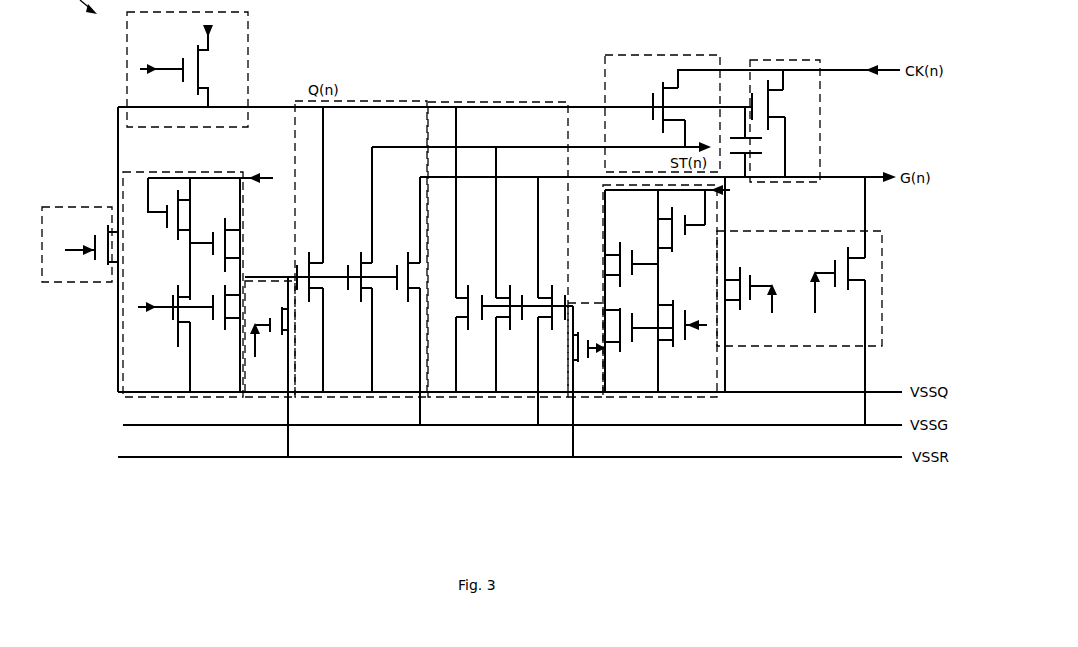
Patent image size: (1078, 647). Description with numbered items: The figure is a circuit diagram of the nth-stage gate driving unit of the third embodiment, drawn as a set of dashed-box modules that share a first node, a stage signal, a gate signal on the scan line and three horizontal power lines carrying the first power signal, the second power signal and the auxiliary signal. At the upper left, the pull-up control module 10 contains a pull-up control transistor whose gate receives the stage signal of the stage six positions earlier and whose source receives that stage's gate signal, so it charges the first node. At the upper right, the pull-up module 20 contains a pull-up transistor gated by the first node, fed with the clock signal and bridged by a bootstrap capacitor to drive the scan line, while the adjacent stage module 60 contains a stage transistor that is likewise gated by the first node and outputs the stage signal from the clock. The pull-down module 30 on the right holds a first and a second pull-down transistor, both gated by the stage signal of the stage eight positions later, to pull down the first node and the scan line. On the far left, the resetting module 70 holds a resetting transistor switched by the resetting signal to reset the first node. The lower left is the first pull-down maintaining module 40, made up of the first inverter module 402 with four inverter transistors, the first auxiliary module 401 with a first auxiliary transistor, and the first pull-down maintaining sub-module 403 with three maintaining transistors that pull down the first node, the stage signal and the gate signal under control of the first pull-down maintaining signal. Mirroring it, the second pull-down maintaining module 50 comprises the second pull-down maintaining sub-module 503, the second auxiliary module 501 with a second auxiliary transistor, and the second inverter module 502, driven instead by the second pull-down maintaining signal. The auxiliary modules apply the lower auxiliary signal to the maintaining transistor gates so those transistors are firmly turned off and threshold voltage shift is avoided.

The pull-up control module 10 is at (248, 20).
The pull-up module 20 is at (820, 104).
The pull-down module 30 is at (882, 233).
The first pull-down maintaining module 40 is at (275, 313).
The first auxiliary module 401 is at (270, 398).
The first inverter module 402 is at (197, 398).
The first pull-down maintaining sub-module 403 is at (361, 293).
The second pull-down maintaining module 50 is at (593, 313).
The second auxiliary module 501 is at (583, 398).
The second inverter module 502 is at (681, 335).
The second pull-down maintaining sub-module 503 is at (503, 398).
The stage module 60 is at (605, 63).
The resetting module 70 is at (78, 284).